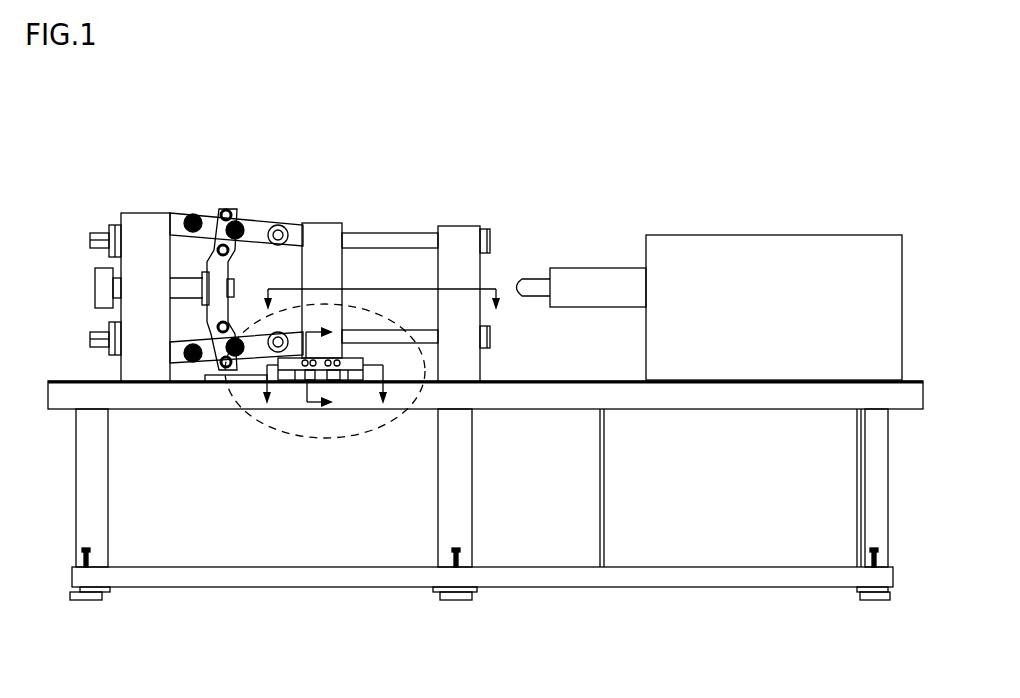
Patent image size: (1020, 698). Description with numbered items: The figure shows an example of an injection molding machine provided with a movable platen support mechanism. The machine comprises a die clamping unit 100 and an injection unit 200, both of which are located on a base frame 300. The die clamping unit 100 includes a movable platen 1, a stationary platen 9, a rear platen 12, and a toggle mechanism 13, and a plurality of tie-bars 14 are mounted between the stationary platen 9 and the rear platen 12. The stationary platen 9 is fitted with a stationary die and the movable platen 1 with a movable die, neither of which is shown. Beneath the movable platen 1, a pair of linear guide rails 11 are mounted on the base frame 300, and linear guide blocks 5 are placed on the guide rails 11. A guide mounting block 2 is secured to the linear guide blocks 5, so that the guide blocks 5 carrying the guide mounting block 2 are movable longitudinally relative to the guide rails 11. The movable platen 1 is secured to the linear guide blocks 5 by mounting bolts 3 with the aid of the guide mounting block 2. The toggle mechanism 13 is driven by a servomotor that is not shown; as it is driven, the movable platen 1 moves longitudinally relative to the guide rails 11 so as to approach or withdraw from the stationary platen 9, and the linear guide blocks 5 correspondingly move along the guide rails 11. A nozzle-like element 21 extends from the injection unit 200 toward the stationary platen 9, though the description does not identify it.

The die clamping unit 100 is at (294, 155).
The injection unit 200 is at (691, 148).
The base frame 300 is at (556, 612).
The movable platen 1 is at (328, 225).
The guide mounting block 2 is at (352, 378).
The mounting bolts 3 is at (305, 380).
The linear guide blocks 5 is at (295, 376).
The stationary platen 9 is at (458, 235).
The linear guide rails 11 is at (203, 380).
The rear platen 12 is at (138, 228).
The toggle mechanism 13 is at (239, 192).
The tie-bars 14 is at (424, 328).
The injection nozzle 21 is at (521, 277).